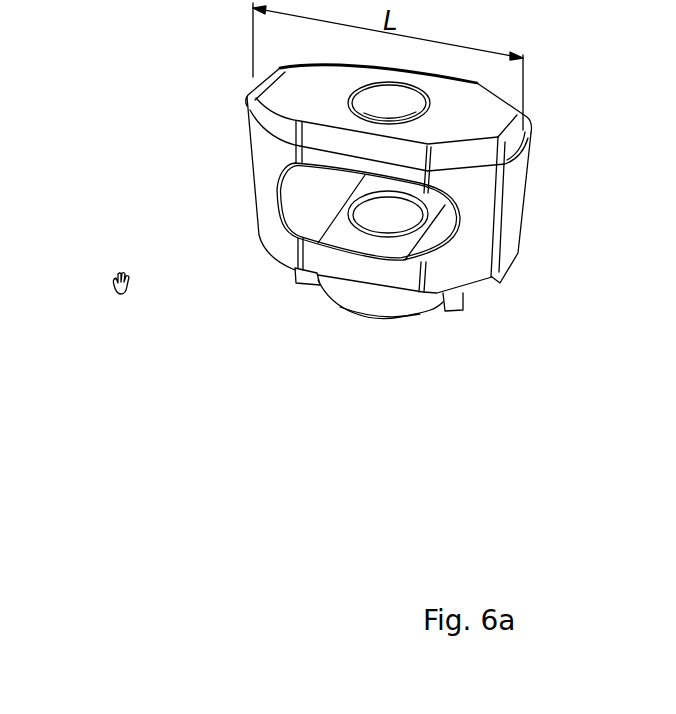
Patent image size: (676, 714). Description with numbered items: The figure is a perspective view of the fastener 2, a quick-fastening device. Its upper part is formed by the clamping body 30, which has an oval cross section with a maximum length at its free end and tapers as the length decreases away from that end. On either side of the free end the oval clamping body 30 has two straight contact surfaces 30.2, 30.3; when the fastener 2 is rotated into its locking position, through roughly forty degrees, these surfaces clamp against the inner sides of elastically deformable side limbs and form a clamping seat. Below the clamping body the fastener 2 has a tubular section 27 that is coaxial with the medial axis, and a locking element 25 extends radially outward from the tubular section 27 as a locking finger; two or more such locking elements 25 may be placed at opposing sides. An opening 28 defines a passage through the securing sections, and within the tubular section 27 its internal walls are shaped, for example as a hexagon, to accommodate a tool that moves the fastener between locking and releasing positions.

The fastener 2 is at (475, 272).
The locking element 25 is at (297, 280).
The tubular section 27 is at (347, 303).
The opening 28 is at (393, 308).
The clamping body 30 is at (528, 222).
The contact surface 30.2 is at (247, 92).
The contact surface 30.3 is at (528, 149).